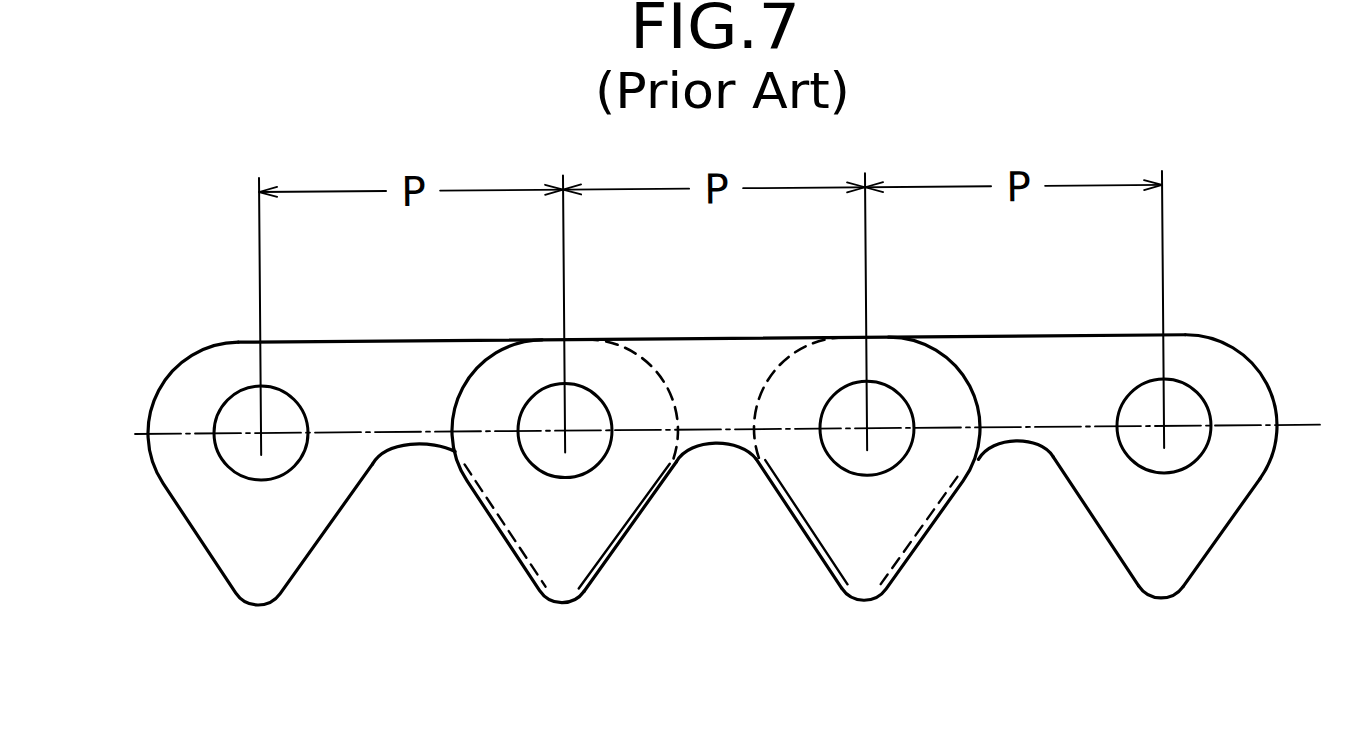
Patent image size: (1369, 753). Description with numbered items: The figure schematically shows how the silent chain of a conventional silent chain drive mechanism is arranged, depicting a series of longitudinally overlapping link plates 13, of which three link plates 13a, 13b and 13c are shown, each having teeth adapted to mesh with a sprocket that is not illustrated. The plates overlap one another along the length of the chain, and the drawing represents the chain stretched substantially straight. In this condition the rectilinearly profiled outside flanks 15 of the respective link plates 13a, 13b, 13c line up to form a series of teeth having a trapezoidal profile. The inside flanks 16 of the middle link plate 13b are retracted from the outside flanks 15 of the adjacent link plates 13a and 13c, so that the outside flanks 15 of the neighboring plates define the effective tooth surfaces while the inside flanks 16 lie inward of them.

The link plate 13a is at (397, 353).
The link plate 13b is at (720, 350).
The link plate 13c is at (1027, 345).
The link plate 13 is at (1185, 333).
The outside flank 15 is at (620, 557).
The inside flank 16 is at (1115, 543).